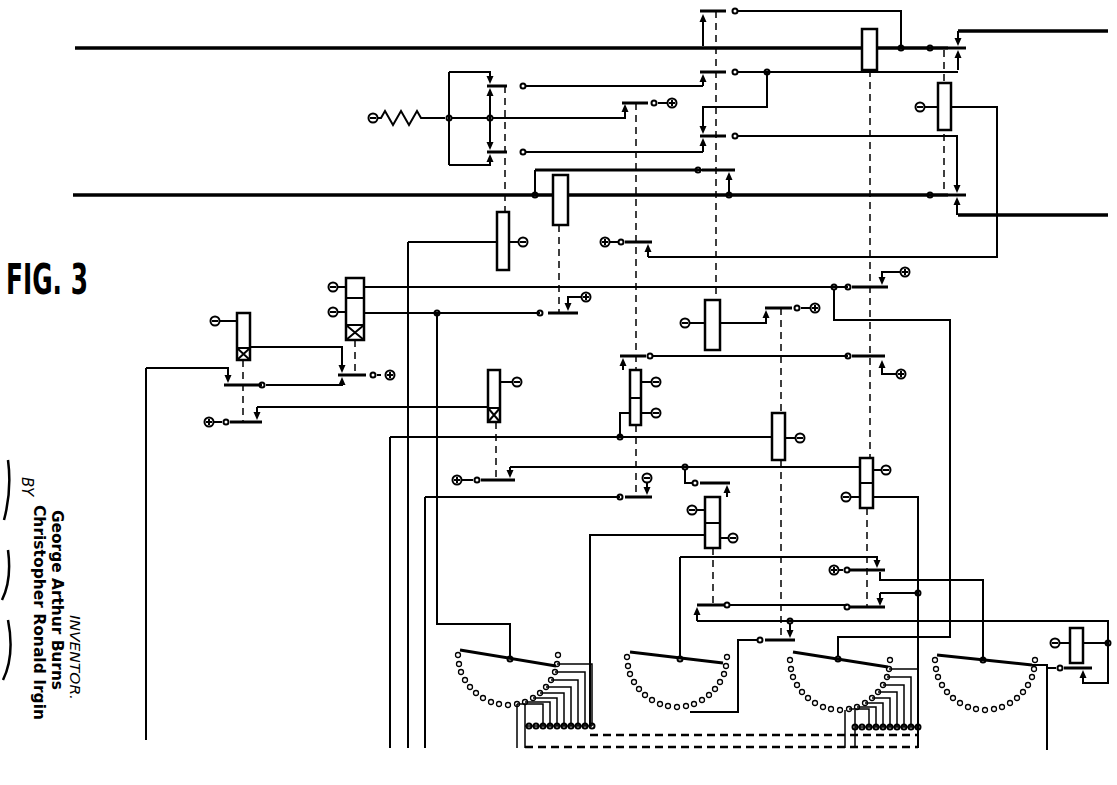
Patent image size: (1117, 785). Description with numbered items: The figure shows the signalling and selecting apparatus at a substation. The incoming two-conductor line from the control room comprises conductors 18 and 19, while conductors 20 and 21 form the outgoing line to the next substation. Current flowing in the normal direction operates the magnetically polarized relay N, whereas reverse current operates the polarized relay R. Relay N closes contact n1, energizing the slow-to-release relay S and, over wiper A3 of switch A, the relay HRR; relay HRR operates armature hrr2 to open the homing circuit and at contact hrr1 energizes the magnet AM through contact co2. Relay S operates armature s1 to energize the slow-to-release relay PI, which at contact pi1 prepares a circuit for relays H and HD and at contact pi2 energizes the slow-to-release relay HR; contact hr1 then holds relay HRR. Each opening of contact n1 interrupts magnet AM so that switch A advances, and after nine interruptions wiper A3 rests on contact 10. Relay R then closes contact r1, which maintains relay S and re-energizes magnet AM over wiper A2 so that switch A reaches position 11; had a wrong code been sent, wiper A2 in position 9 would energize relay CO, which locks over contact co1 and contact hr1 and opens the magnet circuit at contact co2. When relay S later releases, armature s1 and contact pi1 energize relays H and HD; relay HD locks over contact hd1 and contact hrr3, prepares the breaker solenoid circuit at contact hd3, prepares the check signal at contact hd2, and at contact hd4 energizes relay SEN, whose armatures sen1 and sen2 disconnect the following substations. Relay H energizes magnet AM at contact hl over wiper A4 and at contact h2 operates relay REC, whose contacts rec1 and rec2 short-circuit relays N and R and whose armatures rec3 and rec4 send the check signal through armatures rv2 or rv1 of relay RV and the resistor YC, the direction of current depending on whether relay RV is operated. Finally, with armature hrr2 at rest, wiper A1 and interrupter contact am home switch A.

The conductor 18 is at (107, 45).
The conductor 19 is at (105, 192).
The conductor 20 is at (1100, 27).
The conductor 21 is at (1098, 212).
The contact of relay REC rec1 is at (727, 12).
The contact of relay REC rec2 is at (709, 172).
The armature of relay REC rec3 is at (727, 137).
The armature of relay REC rec4 is at (727, 73).
The magnetically polarized relay N is at (862, 60).
The armature of relay SEN sen1 is at (945, 42).
The armature of relay SEN sen2 is at (944, 198).
The relay SEN is at (951, 94).
The armature of relay RV rv1 is at (507, 150).
The armature of relay RV rv2 is at (507, 84).
The resistor YC is at (420, 123).
The contact of relay HD hd2 is at (646, 105).
The magnetically polarized relay R is at (568, 181).
The relay RV is at (509, 218).
The contact of relay HD hd4 is at (652, 240).
The slow-to-release relay S is at (360, 278).
The slow-to-release relay PI is at (250, 323).
The contact of relay PI pi1 is at (253, 364).
The contact of relay PI pi2 is at (259, 425).
The armature of relay S s1 is at (360, 374).
The contact of relay R r1 is at (546, 309).
The relay REC is at (705, 302).
The contact of relay N n1 is at (849, 285).
The contact of relay H h2 is at (787, 311).
The contact of relay HD hd1 is at (648, 358).
The relay HD is at (645, 398).
The slow-to-release relay HR is at (500, 398).
The contact of relay HRR hrr3 is at (877, 353).
The relay H is at (785, 417).
The contact of relay HR hr1 is at (489, 478).
The contact of relay HD hd3 is at (626, 495).
The contact of relay CO co1 is at (728, 483).
The relay CO is at (720, 518).
The relay HRR is at (873, 460).
The armature of relay HRR hrr2 is at (869, 562).
The contact of relay HRR hrr1 is at (846, 606).
The contact of relay CO co2 is at (719, 602).
The contact of relay H hl is at (759, 638).
The magnet of reverse drive switch A AM is at (1074, 628).
The interrupter contact am is at (1076, 673).
The wiper of switch A A1 is at (985, 684).
The wiper of switch A A2 is at (525, 699).
The wiper of switch A A3 is at (854, 700).
The wiper of switch A A4 is at (677, 633).
The bank contact position 9 is at (537, 697).
The bank contact position 10 is at (696, 690).
The bank contact position 11 is at (523, 701).